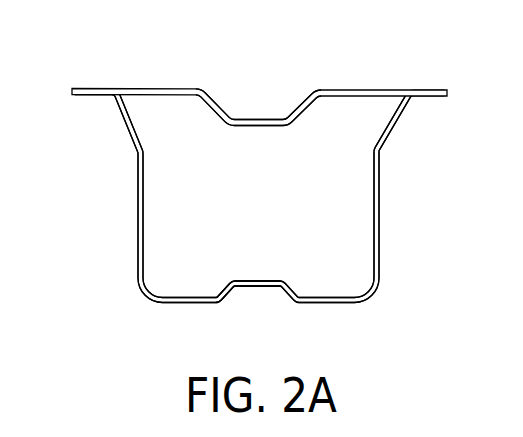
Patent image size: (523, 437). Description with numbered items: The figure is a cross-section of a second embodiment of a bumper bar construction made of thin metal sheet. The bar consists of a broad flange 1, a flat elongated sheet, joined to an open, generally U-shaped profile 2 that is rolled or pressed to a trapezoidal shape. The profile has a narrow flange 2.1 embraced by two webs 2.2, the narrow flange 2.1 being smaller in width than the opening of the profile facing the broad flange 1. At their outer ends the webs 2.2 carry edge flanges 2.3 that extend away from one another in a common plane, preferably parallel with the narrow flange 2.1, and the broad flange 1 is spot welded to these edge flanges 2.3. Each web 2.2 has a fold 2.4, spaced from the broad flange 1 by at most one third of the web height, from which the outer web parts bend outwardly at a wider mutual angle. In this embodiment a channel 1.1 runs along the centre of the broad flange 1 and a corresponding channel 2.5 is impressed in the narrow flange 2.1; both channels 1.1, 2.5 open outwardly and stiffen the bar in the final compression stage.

The broad flange 1 is at (259, 118).
The channel 1.1 is at (258, 126).
The U-shaped profile 2 is at (254, 217).
The narrow flange 2.1 is at (330, 303).
The webs 2.2 is at (138, 243).
The edge flanges 2.3 is at (93, 97).
The folds 2.4 is at (138, 157).
The channel 2.5 is at (270, 257).